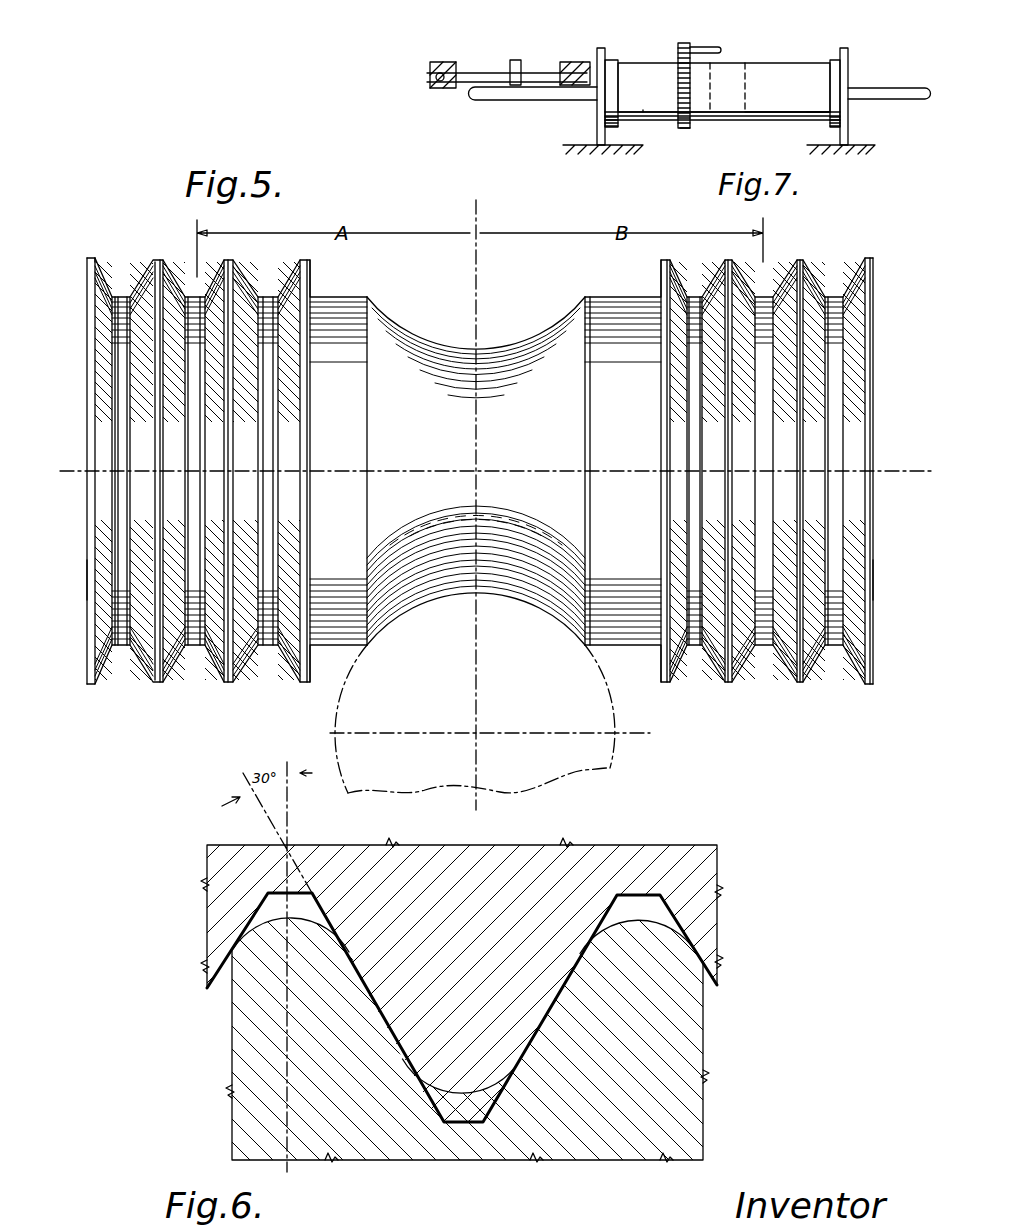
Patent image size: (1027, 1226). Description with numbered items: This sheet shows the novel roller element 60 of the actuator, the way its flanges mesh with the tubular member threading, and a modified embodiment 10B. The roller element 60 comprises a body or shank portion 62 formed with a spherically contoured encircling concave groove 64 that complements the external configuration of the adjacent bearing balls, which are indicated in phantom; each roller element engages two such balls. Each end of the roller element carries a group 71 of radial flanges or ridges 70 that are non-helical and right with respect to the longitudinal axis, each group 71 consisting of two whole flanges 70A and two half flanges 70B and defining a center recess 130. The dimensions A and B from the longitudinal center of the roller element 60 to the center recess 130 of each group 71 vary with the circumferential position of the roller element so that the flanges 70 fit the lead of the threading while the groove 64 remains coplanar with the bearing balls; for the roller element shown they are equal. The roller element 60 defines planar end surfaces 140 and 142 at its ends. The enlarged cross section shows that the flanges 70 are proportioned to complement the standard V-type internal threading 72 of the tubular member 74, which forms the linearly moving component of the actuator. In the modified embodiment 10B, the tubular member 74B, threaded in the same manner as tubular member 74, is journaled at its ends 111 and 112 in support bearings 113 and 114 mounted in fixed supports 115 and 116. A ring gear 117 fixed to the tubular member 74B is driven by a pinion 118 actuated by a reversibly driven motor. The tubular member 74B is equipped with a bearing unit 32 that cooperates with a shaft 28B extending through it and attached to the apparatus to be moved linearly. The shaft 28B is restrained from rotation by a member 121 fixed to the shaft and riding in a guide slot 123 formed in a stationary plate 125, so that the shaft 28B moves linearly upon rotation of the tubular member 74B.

In FIG. 7, the embodiment 10B is at (870, 58).
In FIG. 7, the end 111 is at (643, 112).
In FIG. 7, the end 112 is at (822, 113).
In FIG. 7, the support bearing 113 is at (610, 88).
In FIG. 7, the support bearing 114 is at (832, 80).
In FIG. 7, the fixed support 115 is at (595, 131).
In FIG. 7, the fixed support 116 is at (850, 128).
In FIG. 7, the ring gear 117 is at (683, 130).
In FIG. 7, the pinion 118 is at (678, 47).
In FIG. 7, the member 121 is at (523, 63).
In FIG. 7, the guide slot 123 is at (477, 73).
In FIG. 7, the stationary plate 125 is at (442, 85).
In FIG. 7, the shaft 28B is at (553, 95).
In FIG. 7, the bearing unit 32 is at (725, 95).
In FIG. 7, the tubular member 74B is at (778, 113).
In FIG. 5, the roller element 60 is at (385, 325).
In FIG. 5, the body or shank portion 62 is at (612, 312).
In FIG. 5, the concave groove 64 is at (425, 350).
In FIG. 5, the radial flanges or ridges 70 is at (227, 445).
In FIG. 6, the radial flanges or ridges 70 is at (685, 1037).
In FIG. 5, the whole flanges 70A is at (150, 270).
In FIG. 5, the half flanges 70B is at (88, 262).
In FIG. 5, the group of flanges 71 is at (201, 695).
In FIG. 5, the center recess 130 is at (210, 325).
In FIG. 5, the planar end surface 140 is at (88, 565).
In FIG. 5, the planar end surface 142 is at (876, 582).
In FIG. 6, the internal threading 72 is at (730, 929).
In FIG. 6, the tubular member 74 is at (690, 862).